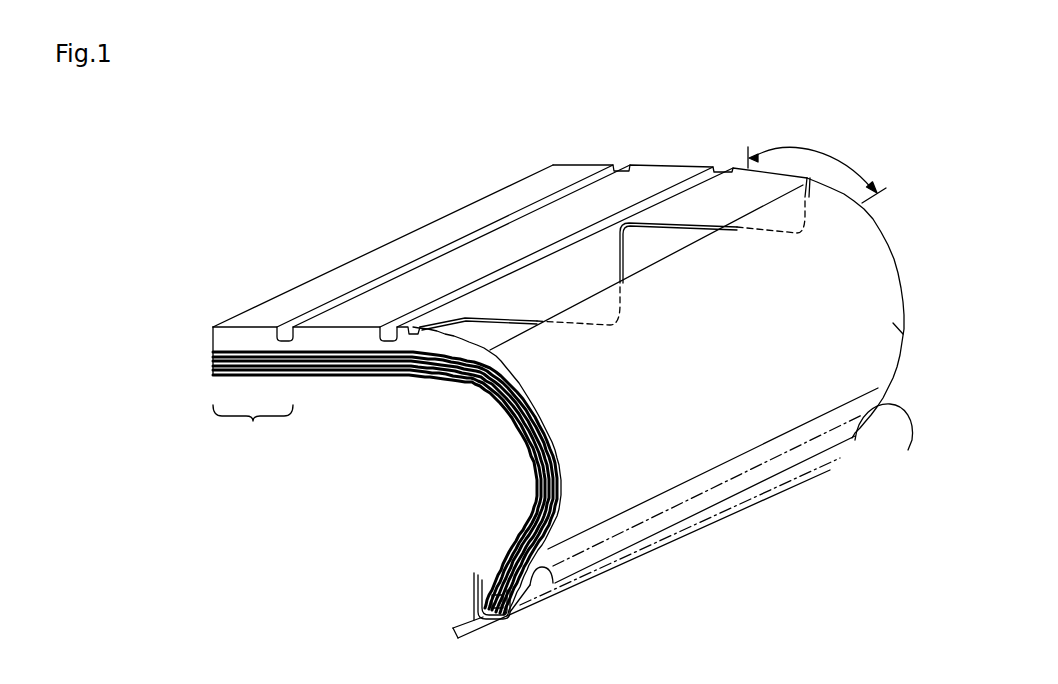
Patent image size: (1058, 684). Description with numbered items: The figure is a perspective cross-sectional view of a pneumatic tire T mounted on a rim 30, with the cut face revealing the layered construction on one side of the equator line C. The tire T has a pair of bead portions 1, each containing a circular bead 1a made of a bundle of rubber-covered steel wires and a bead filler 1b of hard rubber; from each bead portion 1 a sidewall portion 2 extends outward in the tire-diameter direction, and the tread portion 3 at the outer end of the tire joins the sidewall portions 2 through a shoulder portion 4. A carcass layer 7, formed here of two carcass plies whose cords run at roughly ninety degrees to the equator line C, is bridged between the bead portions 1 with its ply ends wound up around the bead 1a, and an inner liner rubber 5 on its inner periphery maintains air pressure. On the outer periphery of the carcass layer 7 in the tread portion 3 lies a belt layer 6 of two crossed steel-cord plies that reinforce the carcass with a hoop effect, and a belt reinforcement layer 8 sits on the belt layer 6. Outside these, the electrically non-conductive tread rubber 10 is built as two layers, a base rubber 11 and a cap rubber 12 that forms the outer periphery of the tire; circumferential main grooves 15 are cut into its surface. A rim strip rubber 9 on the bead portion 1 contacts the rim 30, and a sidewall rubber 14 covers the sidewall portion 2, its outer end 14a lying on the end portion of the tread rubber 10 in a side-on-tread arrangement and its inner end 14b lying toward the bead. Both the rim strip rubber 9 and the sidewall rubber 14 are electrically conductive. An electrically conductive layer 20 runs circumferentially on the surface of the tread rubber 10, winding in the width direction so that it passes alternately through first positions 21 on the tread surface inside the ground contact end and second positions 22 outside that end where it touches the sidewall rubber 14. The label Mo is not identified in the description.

The bead portion 1 is at (602, 592).
The bead 1a is at (490, 600).
The bead filler 1b is at (500, 578).
The sidewall portion 2 is at (904, 372).
The tread portion 3 is at (678, 160).
The shoulder portion 4 is at (817, 169).
The inner liner rubber 5 is at (452, 383).
The belt layer 6 is at (339, 376).
The carcass layer 7 is at (530, 427).
The belt reinforcement layer 8 is at (393, 377).
The rim strip rubber 9 is at (713, 510).
The tread rubber 10 is at (253, 427).
The base rubber 11 is at (229, 374).
The cap rubber 12 is at (267, 374).
The sidewall rubber 14 is at (903, 333).
The outer end of the sidewall rubber 14a is at (677, 250).
The inner end of the sidewall rubber 14b is at (787, 433).
The main groove 15 is at (463, 282).
The electrically conductive layer 20 is at (524, 320).
The first position 21 is at (410, 326).
The second position 22 is at (615, 325).
The rim 30 is at (650, 545).
The equator line C is at (214, 333).
The mold Mo is at (724, 166).
The pneumatic tire T is at (398, 483).